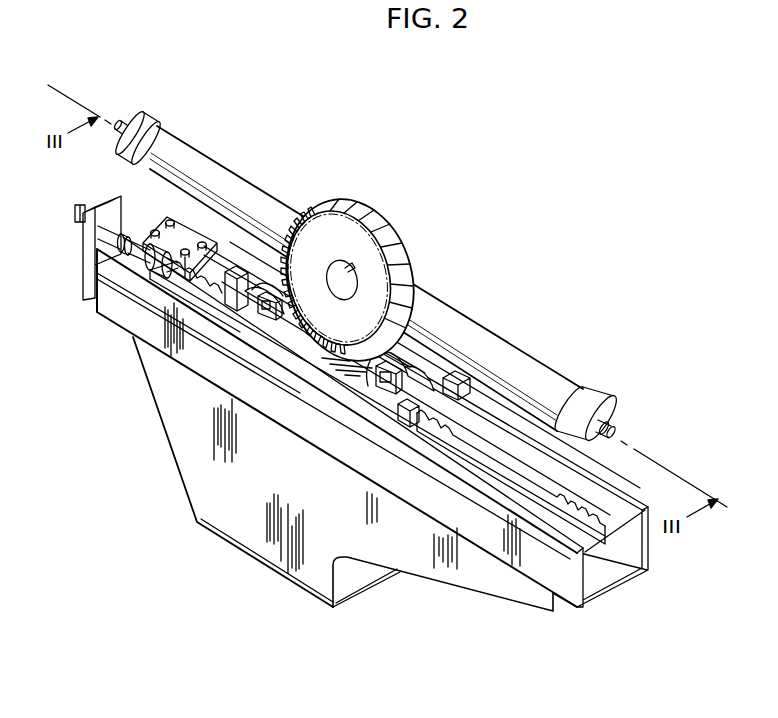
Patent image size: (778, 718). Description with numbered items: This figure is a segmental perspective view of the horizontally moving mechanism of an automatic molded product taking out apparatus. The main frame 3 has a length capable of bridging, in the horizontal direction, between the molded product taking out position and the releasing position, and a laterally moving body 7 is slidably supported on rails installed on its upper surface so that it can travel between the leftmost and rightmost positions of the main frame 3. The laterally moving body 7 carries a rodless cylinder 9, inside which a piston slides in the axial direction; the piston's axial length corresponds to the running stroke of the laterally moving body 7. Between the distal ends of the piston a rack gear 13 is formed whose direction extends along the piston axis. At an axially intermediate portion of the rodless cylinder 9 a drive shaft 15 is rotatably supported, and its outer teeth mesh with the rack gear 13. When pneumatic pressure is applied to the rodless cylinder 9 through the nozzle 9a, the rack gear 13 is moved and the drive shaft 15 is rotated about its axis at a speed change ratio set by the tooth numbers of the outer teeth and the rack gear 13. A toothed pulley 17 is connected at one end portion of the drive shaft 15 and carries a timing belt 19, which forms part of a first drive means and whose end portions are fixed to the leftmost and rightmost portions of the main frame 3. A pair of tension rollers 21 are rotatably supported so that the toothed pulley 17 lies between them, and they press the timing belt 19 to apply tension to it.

The main frame 3 is at (494, 578).
The laterally moving body 7 is at (307, 340).
The rodless cylinder 9 is at (553, 368).
The nozzle 9a is at (613, 425).
The rack gear 13 is at (587, 497).
The drive shaft 15 is at (334, 264).
The toothed pulley 17 is at (364, 290).
The timing belt 19 is at (357, 213).
The tension rollers 21 is at (261, 270).